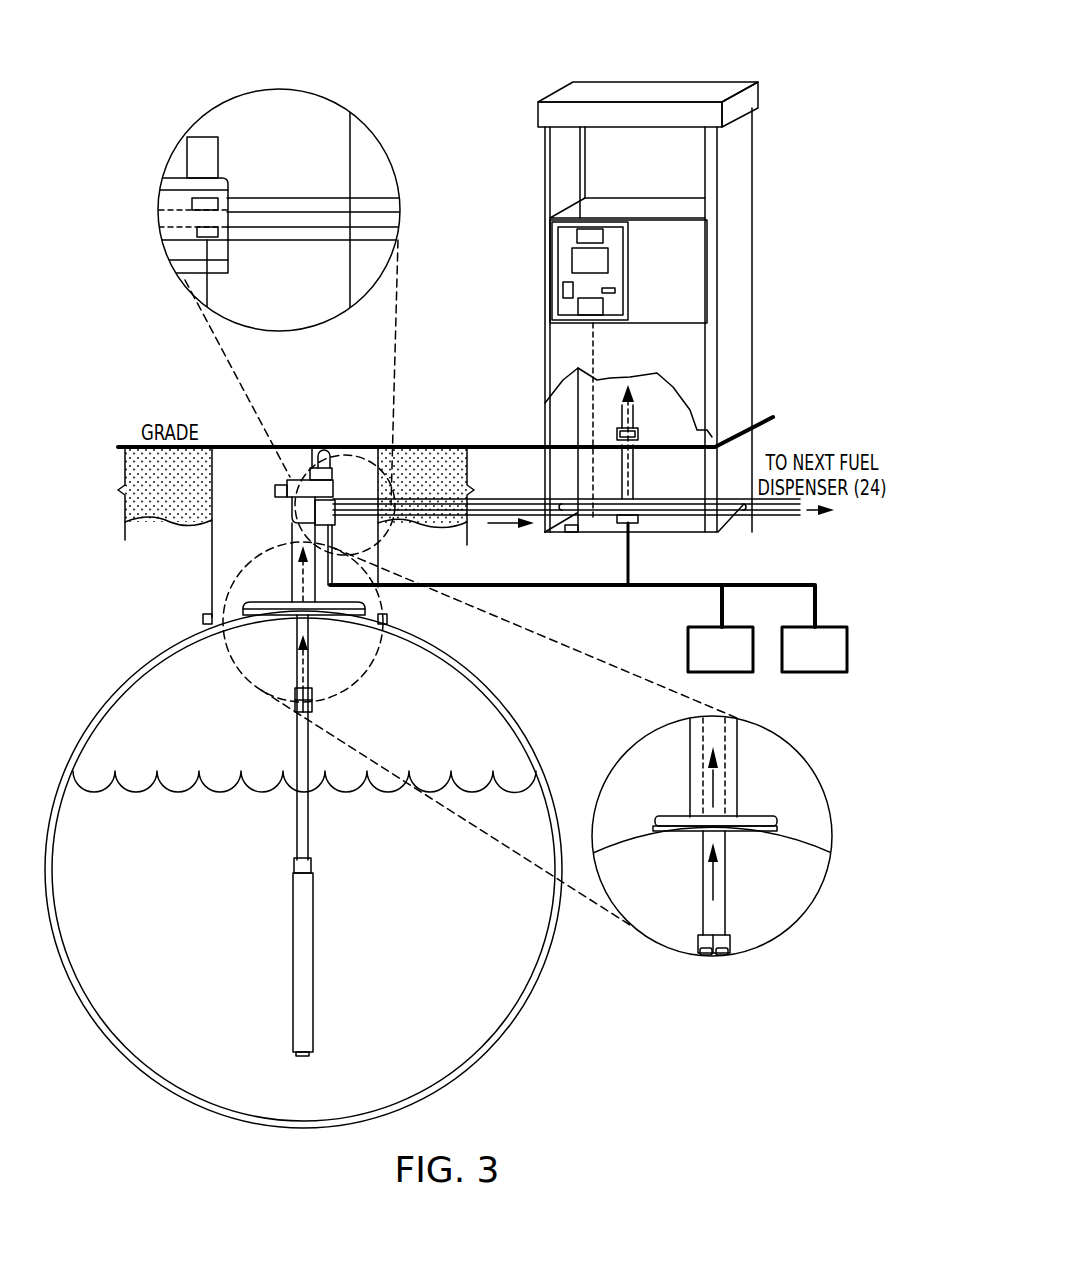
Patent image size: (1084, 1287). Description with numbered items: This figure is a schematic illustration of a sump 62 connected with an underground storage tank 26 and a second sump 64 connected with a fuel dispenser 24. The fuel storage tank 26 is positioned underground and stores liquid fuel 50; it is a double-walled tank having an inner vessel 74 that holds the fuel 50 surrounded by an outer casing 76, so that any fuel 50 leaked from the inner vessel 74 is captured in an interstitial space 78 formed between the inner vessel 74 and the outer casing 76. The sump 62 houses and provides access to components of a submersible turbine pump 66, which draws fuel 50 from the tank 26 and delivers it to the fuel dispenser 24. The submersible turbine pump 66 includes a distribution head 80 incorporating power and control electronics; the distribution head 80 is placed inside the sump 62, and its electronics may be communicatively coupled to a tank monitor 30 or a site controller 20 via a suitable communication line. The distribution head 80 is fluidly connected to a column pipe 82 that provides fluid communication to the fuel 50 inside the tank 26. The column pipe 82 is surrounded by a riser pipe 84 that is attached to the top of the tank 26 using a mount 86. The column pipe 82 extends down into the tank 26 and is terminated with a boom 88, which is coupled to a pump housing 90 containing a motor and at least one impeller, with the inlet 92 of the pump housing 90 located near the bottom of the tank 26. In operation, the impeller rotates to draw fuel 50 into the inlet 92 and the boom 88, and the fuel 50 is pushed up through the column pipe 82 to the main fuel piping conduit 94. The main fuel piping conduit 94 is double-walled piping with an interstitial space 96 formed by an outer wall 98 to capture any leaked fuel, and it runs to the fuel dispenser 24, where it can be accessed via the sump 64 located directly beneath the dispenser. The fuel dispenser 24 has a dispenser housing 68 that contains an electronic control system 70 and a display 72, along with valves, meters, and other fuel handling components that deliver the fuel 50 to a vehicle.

The site controller 20 is at (817, 672).
The fuel dispenser 24 is at (672, 273).
The fuel storage tank 26 is at (312, 869).
The tank monitor 30 is at (688, 647).
The fuel 50 is at (90, 797).
The sump 62 is at (220, 481).
The sump 64 is at (572, 532).
The submersible turbine pump 66 is at (262, 490).
The dispenser housing 68 is at (752, 225).
The electronic control system 70 is at (655, 279).
The display 72 is at (628, 240).
The inner vessel 74 is at (312, 869).
The outer casing 76 is at (530, 995).
The interstitial space 78 is at (482, 1050).
The distribution head 80 is at (288, 515).
The column pipe 82 is at (697, 762).
The riser pipe 84 is at (538, 670).
The mount 86 is at (387, 618).
The boom 88 is at (295, 738).
The pump housing 90 is at (313, 947).
The inlet 92 is at (302, 1057).
The main fuel piping conduit 94 is at (473, 517).
The interstitial space 96 is at (406, 234).
The outer wall 98 is at (758, 517).